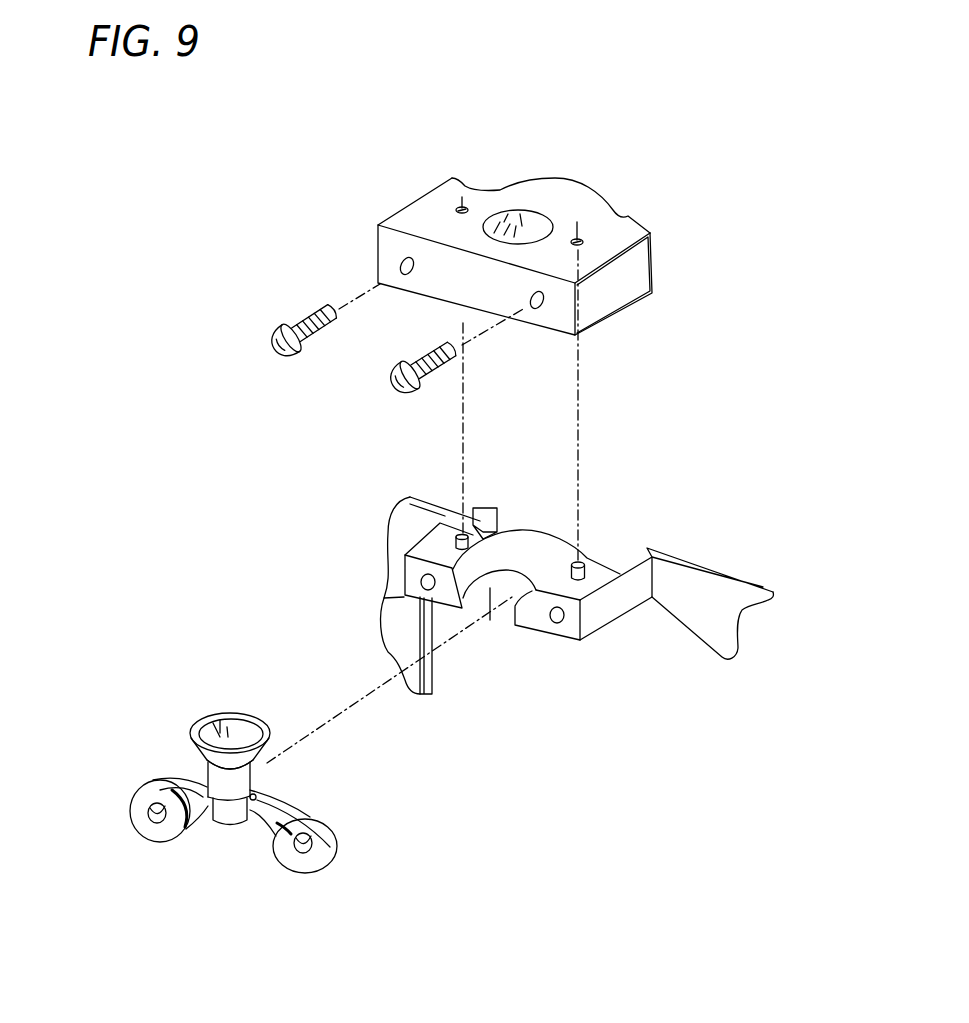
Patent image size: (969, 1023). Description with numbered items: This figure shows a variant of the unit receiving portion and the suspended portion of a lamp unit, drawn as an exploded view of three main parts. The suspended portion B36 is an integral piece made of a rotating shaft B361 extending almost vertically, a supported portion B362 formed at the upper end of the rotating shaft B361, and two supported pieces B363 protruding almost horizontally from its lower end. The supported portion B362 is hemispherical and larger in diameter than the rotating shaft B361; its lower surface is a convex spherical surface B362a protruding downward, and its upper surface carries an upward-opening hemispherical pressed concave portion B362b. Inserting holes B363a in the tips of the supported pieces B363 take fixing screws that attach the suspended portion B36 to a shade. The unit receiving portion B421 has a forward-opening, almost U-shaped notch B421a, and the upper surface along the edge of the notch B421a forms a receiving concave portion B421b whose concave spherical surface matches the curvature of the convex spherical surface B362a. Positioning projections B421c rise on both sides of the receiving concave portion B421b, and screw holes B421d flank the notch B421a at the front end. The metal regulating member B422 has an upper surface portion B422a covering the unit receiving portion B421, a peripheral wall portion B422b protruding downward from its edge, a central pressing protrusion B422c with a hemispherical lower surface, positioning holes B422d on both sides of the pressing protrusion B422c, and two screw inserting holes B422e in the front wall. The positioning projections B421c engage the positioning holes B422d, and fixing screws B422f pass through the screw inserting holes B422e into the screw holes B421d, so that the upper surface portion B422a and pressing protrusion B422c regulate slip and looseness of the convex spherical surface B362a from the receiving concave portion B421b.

The suspended portion B36 is at (232, 789).
The rotating shaft B361 is at (250, 779).
The supported portion B362 is at (250, 713).
The convex spherical surface B362a is at (268, 762).
The pressed concave portion B362b is at (220, 727).
The supported pieces B363 is at (152, 840).
The inserting holes B363a is at (150, 809).
The unit receiving portion B421 is at (518, 642).
The notch B421a is at (492, 587).
The receiving concave portion B421b is at (535, 553).
The positioning projections B421c is at (462, 534).
The screw holes B421d is at (423, 585).
The regulating member B422 is at (400, 190).
The upper surface portion B422a is at (563, 192).
The peripheral wall portion B422b is at (617, 292).
The pressing protrusion B422c is at (523, 217).
The positioning holes B422d is at (463, 203).
The screw inserting holes B422e is at (407, 270).
The fixing screws B422f is at (321, 337).